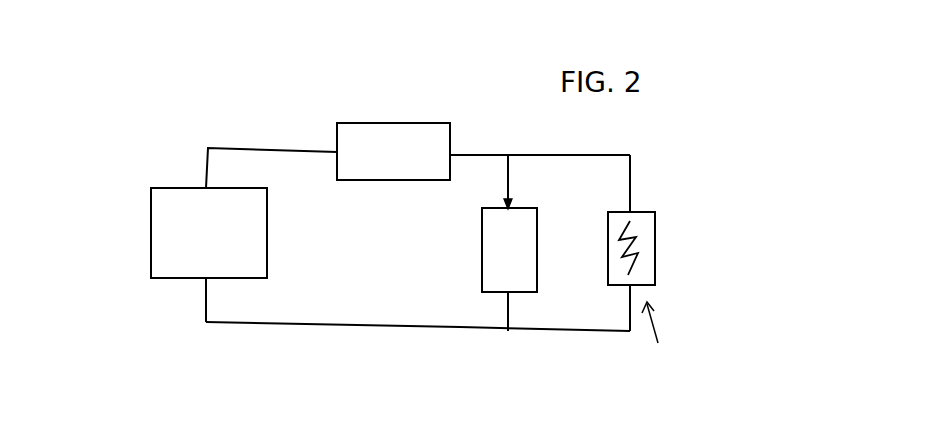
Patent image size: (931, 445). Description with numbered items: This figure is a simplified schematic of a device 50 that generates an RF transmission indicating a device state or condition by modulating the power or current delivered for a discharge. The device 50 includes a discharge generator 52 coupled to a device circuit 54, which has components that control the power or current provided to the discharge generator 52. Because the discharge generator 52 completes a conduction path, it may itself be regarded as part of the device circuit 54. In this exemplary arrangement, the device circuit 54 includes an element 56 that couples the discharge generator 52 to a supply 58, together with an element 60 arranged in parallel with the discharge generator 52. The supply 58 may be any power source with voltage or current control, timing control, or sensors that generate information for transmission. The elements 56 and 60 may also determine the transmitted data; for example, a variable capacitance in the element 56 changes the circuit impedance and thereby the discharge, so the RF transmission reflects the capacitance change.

The device 50 is at (267, 113).
The discharge generator 52 is at (655, 247).
The device circuit 54 is at (463, 354).
The element 56 is at (397, 123).
The supply 58 is at (151, 230).
The element 60 is at (482, 268).